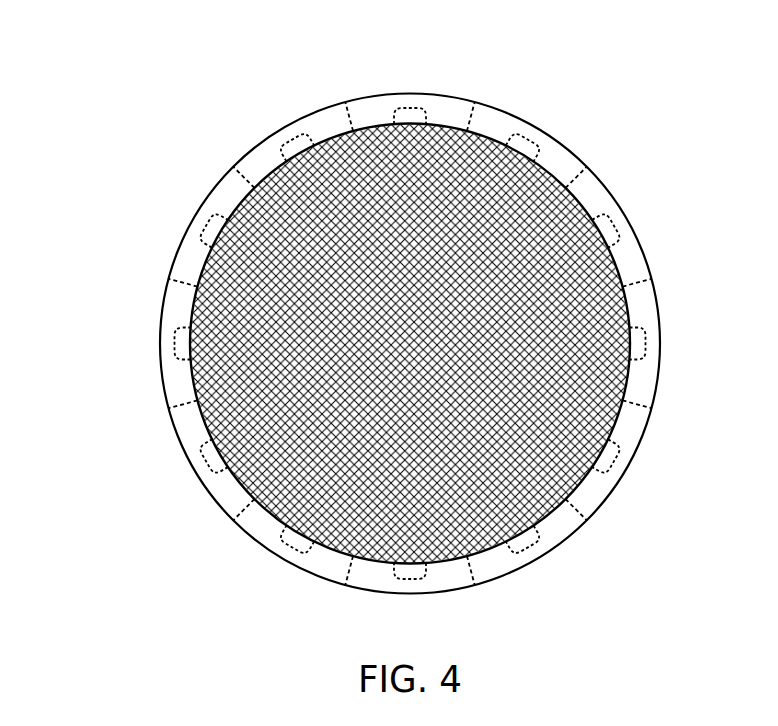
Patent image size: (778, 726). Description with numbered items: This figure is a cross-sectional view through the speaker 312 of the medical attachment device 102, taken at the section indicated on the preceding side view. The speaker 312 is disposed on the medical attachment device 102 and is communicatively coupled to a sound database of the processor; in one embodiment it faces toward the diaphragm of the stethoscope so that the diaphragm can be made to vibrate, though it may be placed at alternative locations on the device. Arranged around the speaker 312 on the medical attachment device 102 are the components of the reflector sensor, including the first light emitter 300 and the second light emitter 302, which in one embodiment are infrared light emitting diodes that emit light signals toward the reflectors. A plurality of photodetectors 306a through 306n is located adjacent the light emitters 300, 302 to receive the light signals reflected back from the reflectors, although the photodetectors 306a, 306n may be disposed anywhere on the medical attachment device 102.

The first light emitter 300 is at (404, 110).
The second light emitter 302 is at (208, 228).
The photodetector 306a is at (289, 146).
The photodetector 306n is at (172, 343).
The speaker 312 is at (520, 228).
The medical attachment device 102 is at (521, 627).